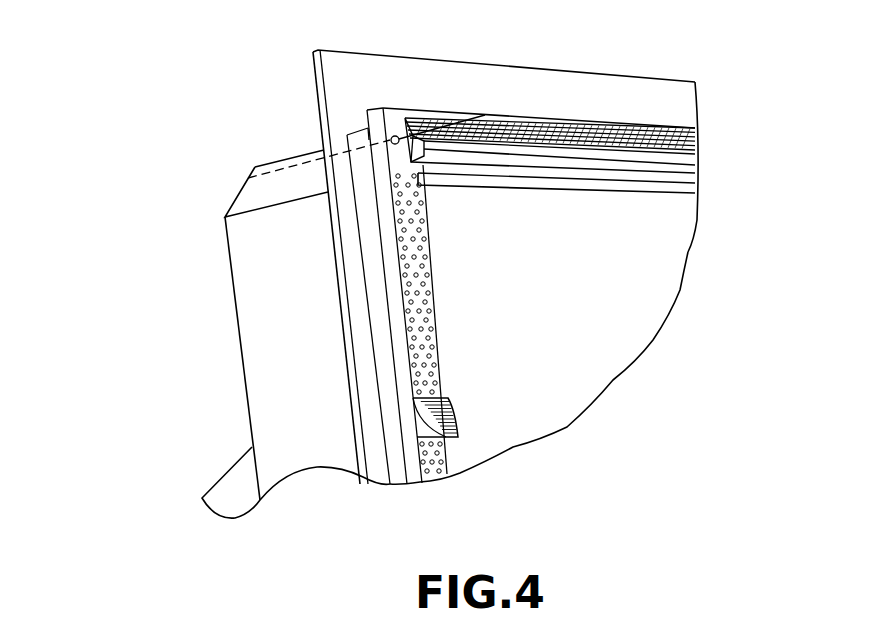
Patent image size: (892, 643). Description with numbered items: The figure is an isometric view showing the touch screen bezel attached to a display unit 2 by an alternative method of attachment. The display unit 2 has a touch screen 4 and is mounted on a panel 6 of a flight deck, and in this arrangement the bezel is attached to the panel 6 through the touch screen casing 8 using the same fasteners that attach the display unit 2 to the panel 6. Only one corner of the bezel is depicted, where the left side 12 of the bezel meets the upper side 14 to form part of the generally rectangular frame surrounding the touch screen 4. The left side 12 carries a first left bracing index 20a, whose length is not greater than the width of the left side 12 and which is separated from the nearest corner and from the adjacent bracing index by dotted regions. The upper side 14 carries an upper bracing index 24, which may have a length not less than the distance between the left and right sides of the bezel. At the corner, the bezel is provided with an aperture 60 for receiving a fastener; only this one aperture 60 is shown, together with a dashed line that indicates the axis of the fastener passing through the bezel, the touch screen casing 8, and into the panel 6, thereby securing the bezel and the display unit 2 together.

The display unit 2 is at (240, 190).
The touch screen 4 is at (638, 283).
The panel 6 is at (480, 88).
The touch screen casing 8 is at (368, 235).
The left side 12 is at (407, 303).
The upper side 14 is at (635, 128).
The upper bracing index 24 is at (578, 165).
The aperture 60 is at (393, 137).
The first left bracing index 20a is at (423, 422).